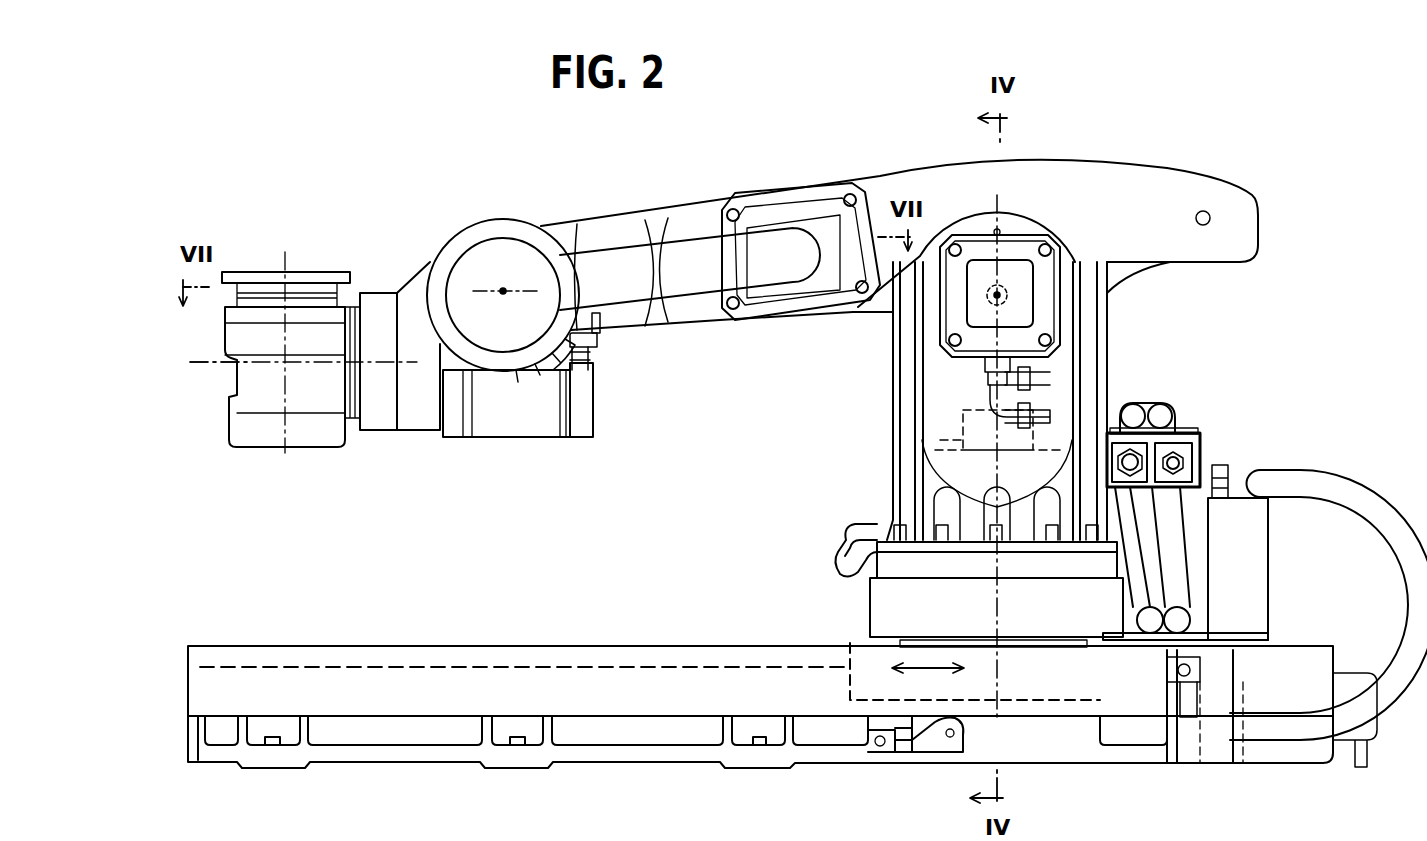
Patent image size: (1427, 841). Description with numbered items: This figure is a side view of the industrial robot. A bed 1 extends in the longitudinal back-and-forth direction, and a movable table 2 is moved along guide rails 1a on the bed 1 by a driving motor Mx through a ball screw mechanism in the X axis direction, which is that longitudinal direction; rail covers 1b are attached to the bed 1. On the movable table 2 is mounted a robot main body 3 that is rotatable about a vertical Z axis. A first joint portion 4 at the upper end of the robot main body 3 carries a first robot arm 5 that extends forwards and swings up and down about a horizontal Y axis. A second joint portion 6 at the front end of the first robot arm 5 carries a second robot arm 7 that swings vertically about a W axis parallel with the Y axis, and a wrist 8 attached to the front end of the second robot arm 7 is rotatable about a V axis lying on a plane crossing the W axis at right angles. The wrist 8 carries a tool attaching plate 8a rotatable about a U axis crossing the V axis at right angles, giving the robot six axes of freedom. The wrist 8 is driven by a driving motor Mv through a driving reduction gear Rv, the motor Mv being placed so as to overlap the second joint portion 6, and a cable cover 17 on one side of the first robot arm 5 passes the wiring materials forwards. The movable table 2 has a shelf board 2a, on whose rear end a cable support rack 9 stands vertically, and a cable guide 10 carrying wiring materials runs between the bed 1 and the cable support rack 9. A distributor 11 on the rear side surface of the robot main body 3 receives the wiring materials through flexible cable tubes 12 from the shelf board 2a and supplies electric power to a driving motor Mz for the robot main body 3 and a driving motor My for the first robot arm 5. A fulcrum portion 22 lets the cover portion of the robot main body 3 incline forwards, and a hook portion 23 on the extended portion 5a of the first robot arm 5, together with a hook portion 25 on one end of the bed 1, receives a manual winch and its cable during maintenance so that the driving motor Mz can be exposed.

The bed 1 is at (449, 773).
The guide rails 1a is at (563, 672).
The rail covers 1b is at (420, 650).
The movable table 2 is at (1058, 680).
The shelf board 2a is at (1243, 630).
The robot main body 3 is at (868, 475).
The first joint portion 4 is at (992, 268).
The first robot arm 5 is at (825, 188).
The extended portion 5a is at (1170, 170).
The second joint portion 6 is at (506, 288).
The second robot arm 7 is at (430, 263).
The wrist 8 is at (263, 440).
The tool attaching plate 8a is at (262, 275).
The cable support rack 9 is at (1257, 562).
The cable guide 10 is at (1318, 478).
The distributor 11 is at (1205, 450).
The flexible cable tubes 12 is at (1177, 567).
The cable cover 17 is at (633, 262).
The fulcrum portion 22 is at (817, 550).
The hook portion 23 is at (1208, 212).
The hook portion 25 is at (1195, 690).
The driving motor Mv is at (520, 430).
The driving motor Mx is at (1305, 665).
The driving motor My is at (1045, 312).
The driving motor Mz is at (905, 440).
The driving reduction gear Rv is at (380, 418).
The U axis U is at (290, 455).
The V axis V is at (212, 365).
The W axis W is at (508, 256).
The X axis X is at (930, 667).
The Y axis Y is at (983, 297).
The Z axis Z is at (1008, 195).